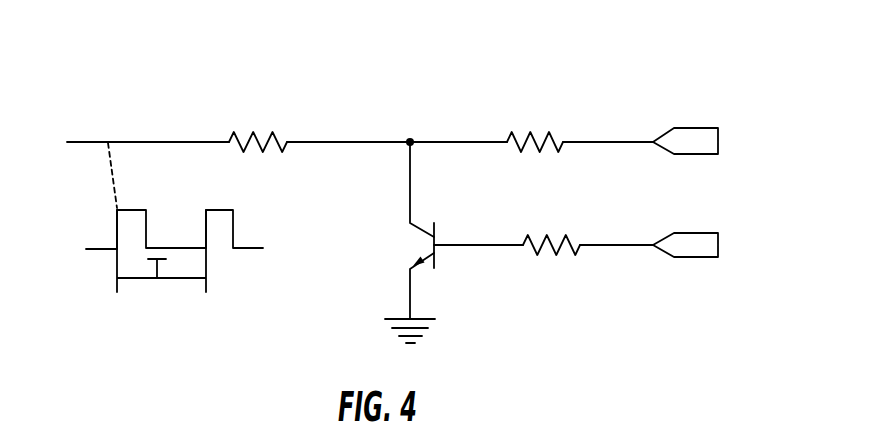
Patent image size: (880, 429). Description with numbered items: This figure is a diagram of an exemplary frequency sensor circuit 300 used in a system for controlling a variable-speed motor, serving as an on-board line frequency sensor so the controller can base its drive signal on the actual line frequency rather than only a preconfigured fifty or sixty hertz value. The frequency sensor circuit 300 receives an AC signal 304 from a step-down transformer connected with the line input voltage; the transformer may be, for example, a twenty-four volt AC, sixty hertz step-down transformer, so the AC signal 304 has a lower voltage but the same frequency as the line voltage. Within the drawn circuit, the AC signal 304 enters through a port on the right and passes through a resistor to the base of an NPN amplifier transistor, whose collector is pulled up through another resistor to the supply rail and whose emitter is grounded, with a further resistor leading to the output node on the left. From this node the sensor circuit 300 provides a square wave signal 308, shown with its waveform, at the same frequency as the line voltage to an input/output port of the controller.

The frequency sensor circuit 300 is at (408, 66).
The AC signal 304 is at (695, 258).
The square wave signal 308 is at (96, 143).